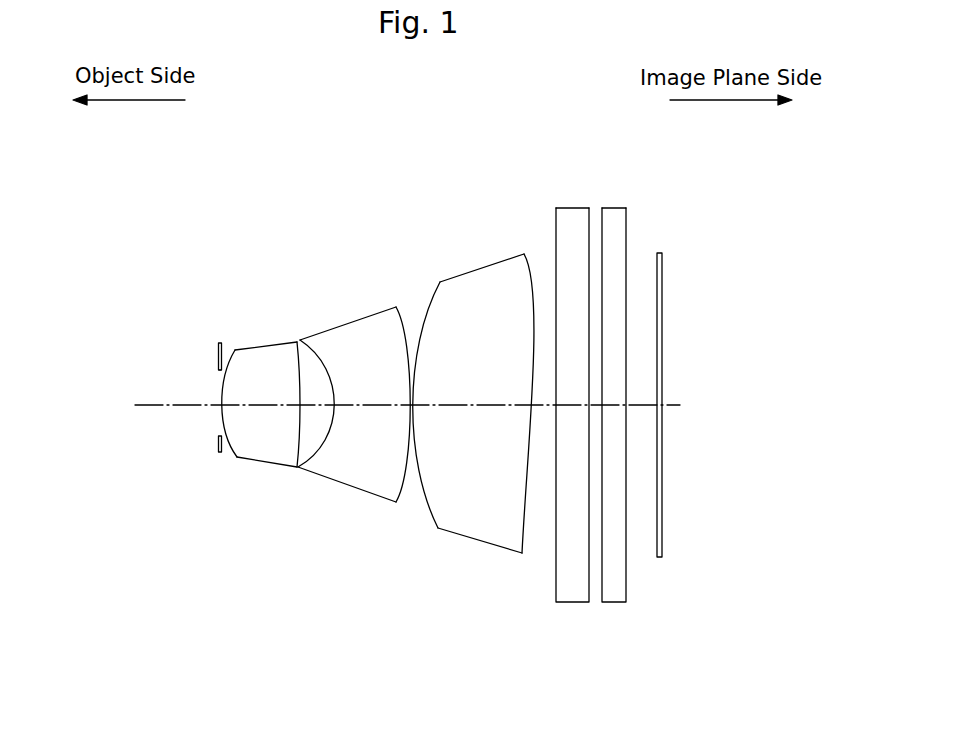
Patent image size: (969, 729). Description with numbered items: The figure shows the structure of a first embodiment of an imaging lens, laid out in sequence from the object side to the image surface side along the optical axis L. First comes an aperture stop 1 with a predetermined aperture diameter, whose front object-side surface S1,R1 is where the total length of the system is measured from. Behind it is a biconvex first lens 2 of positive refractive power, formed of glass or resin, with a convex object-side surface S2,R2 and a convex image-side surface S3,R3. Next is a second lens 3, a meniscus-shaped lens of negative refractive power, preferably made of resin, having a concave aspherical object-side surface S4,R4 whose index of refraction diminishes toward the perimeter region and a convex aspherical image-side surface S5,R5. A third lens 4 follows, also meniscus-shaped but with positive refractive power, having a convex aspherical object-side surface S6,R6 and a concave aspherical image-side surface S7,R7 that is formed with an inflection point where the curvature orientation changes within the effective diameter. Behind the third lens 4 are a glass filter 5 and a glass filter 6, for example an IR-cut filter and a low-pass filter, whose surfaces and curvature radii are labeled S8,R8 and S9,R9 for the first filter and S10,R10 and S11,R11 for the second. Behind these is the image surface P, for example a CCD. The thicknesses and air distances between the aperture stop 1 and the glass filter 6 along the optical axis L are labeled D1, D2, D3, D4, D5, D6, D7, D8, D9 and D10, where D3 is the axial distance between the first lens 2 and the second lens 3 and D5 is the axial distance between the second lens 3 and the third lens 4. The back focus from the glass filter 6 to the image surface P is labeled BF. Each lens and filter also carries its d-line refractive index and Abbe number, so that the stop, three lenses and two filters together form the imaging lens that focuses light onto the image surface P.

The aperture stop 1 is at (164, 342).
The first lens 2 is at (249, 339).
The second lens 3 is at (351, 348).
The third lens 4 is at (477, 355).
The glass filter 5 is at (550, 361).
The glass filter 6 is at (684, 360).
The surface S1 and curvature radius R1 S1,R1 is at (219, 367).
The object-side surface S2 and curvature radius R2 S2,R2 is at (232, 349).
The image-side surface S3 and curvature radius R3 S3,R3 is at (298, 348).
The object-side surface S4 and curvature radius R4 S4,R4 is at (322, 370).
The image-side surface S5 and curvature radius R5 S5,R5 is at (395, 305).
The object-side surface S6 and curvature radius R6 S6,R6 is at (409, 357).
The image-side surface S7 and curvature radius R7 S7,R7 is at (536, 316).
The surface S8 and curvature radius R8 S8,R8 is at (558, 266).
The surface S9 and curvature radius R9 S9,R9 is at (590, 283).
The surface S10 and curvature radius R10 S10,R10 is at (604, 280).
The surface S11 and curvature radius R11 S11,R11 is at (627, 276).
The distance D1 is at (220, 410).
The distance D2 is at (275, 405).
The distance D3 is at (320, 405).
The distance D4 is at (372, 405).
The distance D5 is at (415, 407).
The distance D6 is at (485, 405).
The distance D7 is at (543, 407).
The distance D8 is at (573, 407).
The distance D9 is at (596, 407).
The distance D10 is at (614, 407).
The optical axis L is at (153, 403).
The image surface P is at (668, 298).
The back focus BF is at (647, 407).